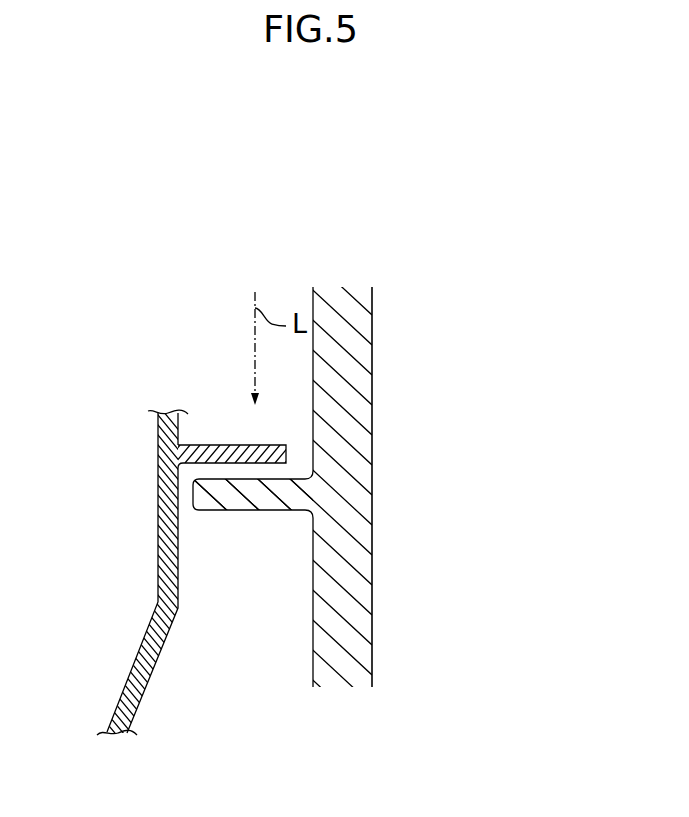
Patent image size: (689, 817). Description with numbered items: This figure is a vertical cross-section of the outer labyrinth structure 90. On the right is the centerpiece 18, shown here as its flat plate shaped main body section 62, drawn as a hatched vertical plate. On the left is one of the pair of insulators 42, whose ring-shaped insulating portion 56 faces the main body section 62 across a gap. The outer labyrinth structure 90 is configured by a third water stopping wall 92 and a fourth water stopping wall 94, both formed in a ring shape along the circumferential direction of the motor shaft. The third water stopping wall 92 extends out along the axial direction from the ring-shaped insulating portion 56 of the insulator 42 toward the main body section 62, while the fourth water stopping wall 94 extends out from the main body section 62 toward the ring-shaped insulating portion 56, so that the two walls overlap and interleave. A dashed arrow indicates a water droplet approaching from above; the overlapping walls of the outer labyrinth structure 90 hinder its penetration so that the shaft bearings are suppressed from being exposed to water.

The centerpiece 18 is at (373, 331).
The main body section 62 is at (335, 481).
The insulator 42 is at (158, 563).
The ring-shaped insulating portion 56 is at (118, 576).
The outer labyrinth structure 90 is at (356, 515).
The third water stopping wall 92 is at (247, 445).
The fourth water stopping wall 94 is at (250, 510).